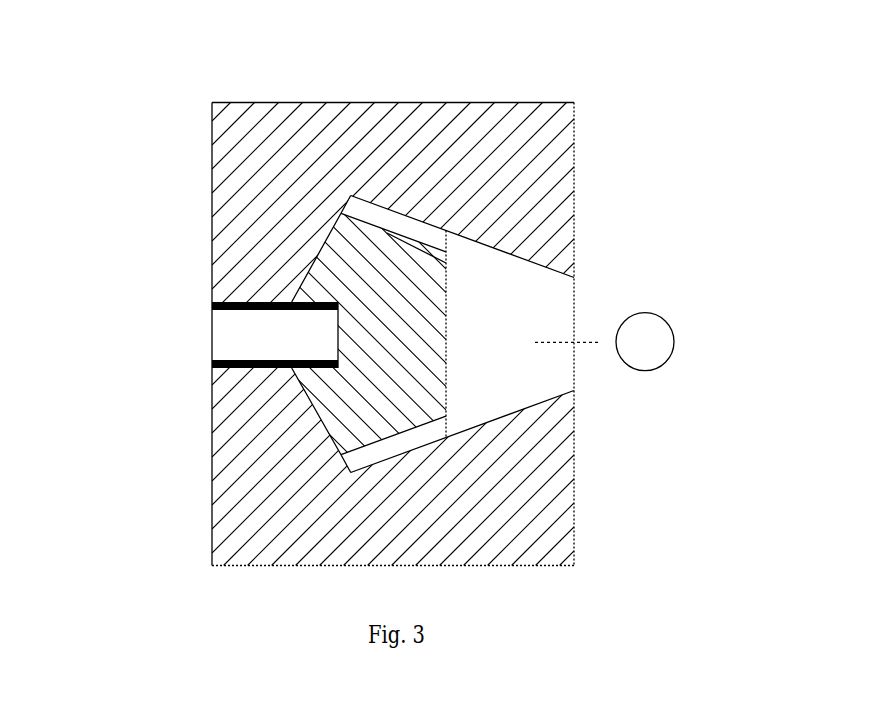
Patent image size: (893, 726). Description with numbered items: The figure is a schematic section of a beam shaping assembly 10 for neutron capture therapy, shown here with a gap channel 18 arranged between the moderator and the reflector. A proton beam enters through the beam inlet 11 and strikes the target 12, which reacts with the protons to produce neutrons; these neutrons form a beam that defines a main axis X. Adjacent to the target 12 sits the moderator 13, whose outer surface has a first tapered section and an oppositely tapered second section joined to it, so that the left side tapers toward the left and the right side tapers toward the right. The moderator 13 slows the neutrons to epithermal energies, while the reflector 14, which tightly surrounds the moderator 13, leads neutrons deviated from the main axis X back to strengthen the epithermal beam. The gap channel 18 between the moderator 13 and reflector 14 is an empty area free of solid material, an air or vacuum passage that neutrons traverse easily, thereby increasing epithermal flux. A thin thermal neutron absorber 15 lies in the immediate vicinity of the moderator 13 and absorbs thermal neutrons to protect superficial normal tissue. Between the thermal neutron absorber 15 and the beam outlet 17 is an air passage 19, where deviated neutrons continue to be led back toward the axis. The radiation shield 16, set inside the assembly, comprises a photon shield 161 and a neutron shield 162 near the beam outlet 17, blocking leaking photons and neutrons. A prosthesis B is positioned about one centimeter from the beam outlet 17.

The beam shaping assembly 10 is at (142, 146).
The beam inlet 11 is at (213, 320).
The target 12 is at (338, 338).
The moderator 13 is at (348, 395).
The reflector 14 is at (238, 462).
The thermal neutron absorber 15 is at (446, 338).
The radiation shield 16 is at (606, 122).
The photon shield 161 is at (527, 162).
The neutron shield 162 is at (575, 225).
The beam outlet 17 is at (548, 375).
The gap channel 18 is at (381, 217).
The air passage 19 is at (478, 285).
The main axis X is at (558, 342).
The prosthesis B is at (643, 313).